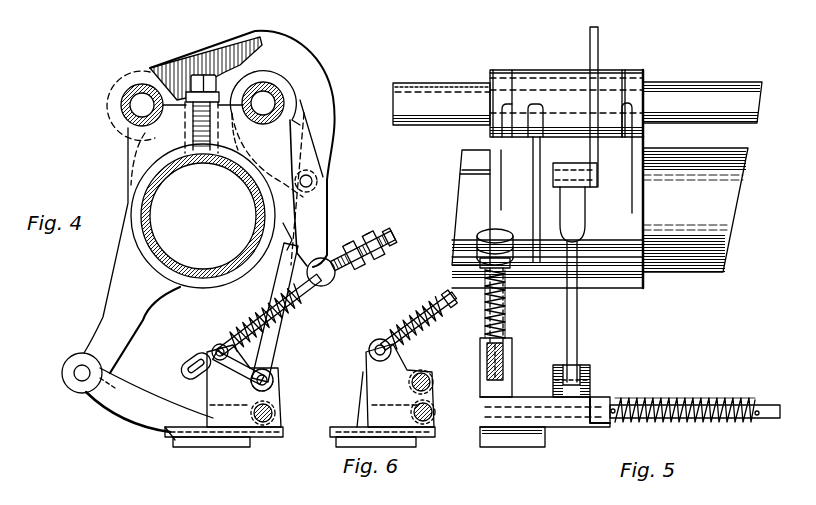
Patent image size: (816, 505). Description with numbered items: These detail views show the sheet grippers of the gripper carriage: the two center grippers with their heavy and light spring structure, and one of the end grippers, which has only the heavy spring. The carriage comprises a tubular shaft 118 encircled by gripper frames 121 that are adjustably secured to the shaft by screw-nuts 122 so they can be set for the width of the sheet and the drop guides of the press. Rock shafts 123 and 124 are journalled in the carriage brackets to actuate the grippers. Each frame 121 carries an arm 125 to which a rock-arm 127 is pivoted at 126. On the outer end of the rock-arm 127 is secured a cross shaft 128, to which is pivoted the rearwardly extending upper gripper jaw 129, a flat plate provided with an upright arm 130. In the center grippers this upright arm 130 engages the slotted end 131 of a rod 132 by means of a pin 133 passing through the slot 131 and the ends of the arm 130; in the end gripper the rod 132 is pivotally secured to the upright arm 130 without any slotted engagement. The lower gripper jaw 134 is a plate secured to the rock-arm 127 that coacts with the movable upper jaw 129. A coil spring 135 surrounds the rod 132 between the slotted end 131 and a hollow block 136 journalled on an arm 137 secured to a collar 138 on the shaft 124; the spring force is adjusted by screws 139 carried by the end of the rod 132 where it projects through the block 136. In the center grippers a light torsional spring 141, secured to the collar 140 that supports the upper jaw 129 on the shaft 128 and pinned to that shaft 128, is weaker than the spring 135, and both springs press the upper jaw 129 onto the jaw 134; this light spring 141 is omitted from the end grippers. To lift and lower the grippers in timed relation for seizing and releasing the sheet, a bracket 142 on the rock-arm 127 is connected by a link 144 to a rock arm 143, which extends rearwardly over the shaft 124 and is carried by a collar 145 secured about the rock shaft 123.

In FIG. 4, the tubular shaft 118 is at (203, 216).
In FIG. 5, the tubular shaft 118 is at (694, 274).
In FIG. 4, the gripper frame 121 is at (266, 140).
In FIG. 5, the gripper frame 121 is at (547, 212).
In FIG. 4, the screw-nut 122 is at (213, 37).
In FIG. 4, the rock shaft 123 is at (121, 105).
In FIG. 4, the rock shaft 124 is at (264, 102).
In FIG. 5, the rock shaft 124 is at (462, 66).
In FIG. 4, the arm 125 is at (107, 316).
In FIG. 4, the pivot 126 is at (82, 375).
In FIG. 4, the rock-arm 127 is at (163, 383).
In FIG. 4, the cross shaft 128 is at (276, 413).
In FIG. 5, the cross shaft 128 is at (773, 399).
In FIG. 6, the cross shaft 128 is at (432, 420).
In FIG. 4, the upper gripper jaw 129 is at (170, 438).
In FIG. 6, the upper gripper jaw 129 is at (367, 365).
In FIG. 4, the upright arm 130 is at (213, 393).
In FIG. 5, the upright arm 130 is at (485, 385).
In FIG. 6, the upright arm 130 is at (431, 383).
In FIG. 4, the slotted end 131 is at (208, 347).
In FIG. 6, the slotted end 131 is at (343, 434).
In FIG. 4, the rod 132 is at (262, 332).
In FIG. 4, the pin 133 is at (264, 358).
In FIG. 4, the lower gripper jaw 134 is at (195, 447).
In FIG. 5, the lower gripper jaw 134 is at (530, 447).
In FIG. 4, the coil spring 135 is at (297, 316).
In FIG. 5, the coil spring 135 is at (506, 313).
In FIG. 6, the coil spring 135 is at (411, 318).
In FIG. 4, the hollow block 136 is at (336, 281).
In FIG. 5, the hollow block 136 is at (483, 295).
In FIG. 4, the arm 137 is at (317, 228).
In FIG. 5, the arm 137 is at (534, 193).
In FIG. 4, the collar 138 is at (336, 96).
In FIG. 4, the screw 139 is at (392, 249).
In FIG. 5, the screw 139 is at (490, 236).
In FIG. 5, the collar 140 is at (533, 400).
In FIG. 5, the light torsional spring 141 is at (645, 406).
In FIG. 4, the bracket 142 is at (278, 392).
In FIG. 5, the bracket 142 is at (592, 380).
In FIG. 4, the rock arm 143 is at (322, 132).
In FIG. 5, the rock arm 143 is at (602, 185).
In FIG. 4, the link 144 is at (282, 285).
In FIG. 5, the link 144 is at (578, 330).
In FIG. 4, the collar 145 is at (128, 142).